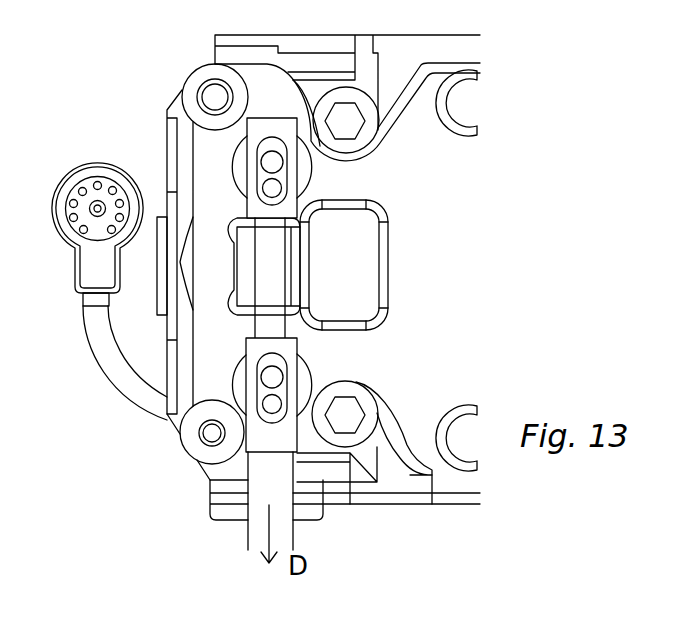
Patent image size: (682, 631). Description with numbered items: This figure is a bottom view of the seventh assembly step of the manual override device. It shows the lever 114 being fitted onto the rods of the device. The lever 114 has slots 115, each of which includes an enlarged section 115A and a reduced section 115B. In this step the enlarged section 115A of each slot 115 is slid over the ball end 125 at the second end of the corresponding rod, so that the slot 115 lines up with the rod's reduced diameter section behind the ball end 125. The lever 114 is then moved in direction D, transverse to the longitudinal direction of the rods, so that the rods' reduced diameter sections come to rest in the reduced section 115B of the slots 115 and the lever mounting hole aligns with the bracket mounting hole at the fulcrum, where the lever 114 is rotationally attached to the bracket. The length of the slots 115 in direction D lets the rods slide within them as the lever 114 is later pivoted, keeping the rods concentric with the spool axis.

The lever 114 is at (268, 495).
The slots 115 is at (276, 334).
The enlarged section of the slots 115A is at (200, 433).
The reduced section of the slots 115B is at (266, 165).
The ball end 125 is at (272, 380).